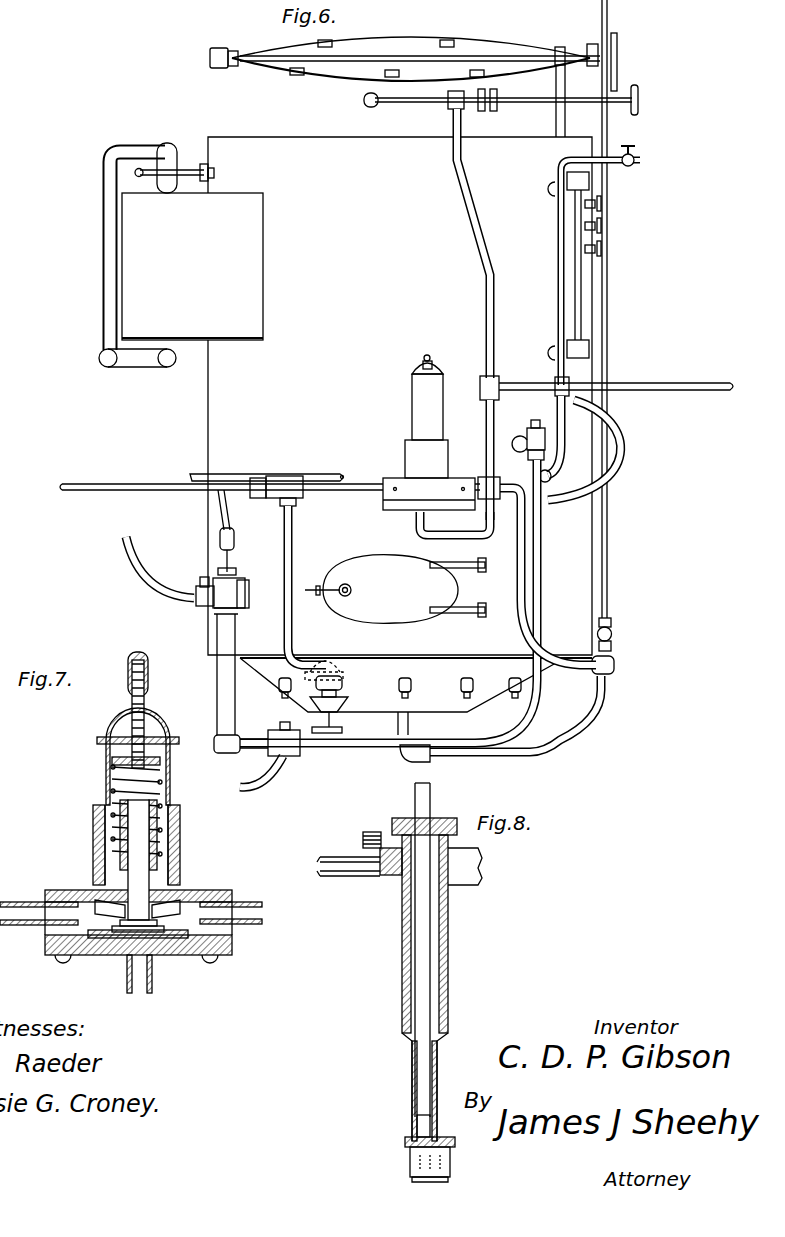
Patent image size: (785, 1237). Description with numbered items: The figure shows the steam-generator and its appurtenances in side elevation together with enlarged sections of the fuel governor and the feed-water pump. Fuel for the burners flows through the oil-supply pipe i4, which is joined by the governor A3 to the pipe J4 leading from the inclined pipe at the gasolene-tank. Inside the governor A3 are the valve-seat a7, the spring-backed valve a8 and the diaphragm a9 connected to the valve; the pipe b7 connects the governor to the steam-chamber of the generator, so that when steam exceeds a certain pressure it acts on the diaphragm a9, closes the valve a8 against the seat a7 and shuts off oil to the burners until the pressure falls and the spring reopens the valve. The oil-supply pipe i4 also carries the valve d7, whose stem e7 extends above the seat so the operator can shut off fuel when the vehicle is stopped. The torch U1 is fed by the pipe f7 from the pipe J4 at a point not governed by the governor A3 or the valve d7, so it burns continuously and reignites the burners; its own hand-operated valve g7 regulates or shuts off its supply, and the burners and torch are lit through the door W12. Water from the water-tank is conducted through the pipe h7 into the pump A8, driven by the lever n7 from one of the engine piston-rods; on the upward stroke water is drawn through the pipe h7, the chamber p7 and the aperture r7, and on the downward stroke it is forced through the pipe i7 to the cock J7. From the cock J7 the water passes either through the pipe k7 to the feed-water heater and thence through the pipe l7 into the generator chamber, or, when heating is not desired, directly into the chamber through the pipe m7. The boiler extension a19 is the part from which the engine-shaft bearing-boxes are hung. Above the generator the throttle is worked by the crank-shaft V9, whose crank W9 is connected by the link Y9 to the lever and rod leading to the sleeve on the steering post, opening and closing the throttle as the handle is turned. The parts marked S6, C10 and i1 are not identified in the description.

In FIG. 6, the crank-shaft V9 is at (376, 66).
In FIG. 6, the crank W9 is at (590, 44).
In FIG. 6, the link Y9 is at (617, 62).
In FIG. 6, the pipe connection S6 is at (188, 163).
In FIG. 6, the boiler extension a19 is at (200, 285).
In FIG. 6, the pipe b7 is at (496, 358).
In FIG. 7, the pipe b7 is at (142, 985).
In FIG. 6, the rod C10 is at (625, 384).
In FIG. 6, the governor A3 is at (443, 454).
In FIG. 7, the governor A3 is at (173, 787).
In FIG. 6, the lever n7 is at (242, 473).
In FIG. 6, the pipe J4 is at (65, 492).
In FIG. 7, the pipe J4 is at (20, 900).
In FIG. 6, the pipe l7 is at (608, 488).
In FIG. 6, the pipe k7 is at (140, 575).
In FIG. 6, the pipe f7 is at (284, 584).
In FIG. 6, the door W12 is at (395, 589).
In FIG. 6, the oil-supply pipe i4 is at (520, 610).
In FIG. 7, the oil-supply pipe i4 is at (262, 908).
In FIG. 6, the stem e7 is at (609, 593).
In FIG. 6, the pump A8 is at (230, 648).
In FIG. 8, the pump A8 is at (450, 962).
In FIG. 6, the torch U1 is at (343, 684).
In FIG. 6, the fitting i1 is at (412, 684).
In FIG. 6, the valve d7 is at (614, 664).
In FIG. 6, the pipe m7 is at (530, 700).
In FIG. 6, the pipe i7 is at (256, 738).
In FIG. 8, the pipe i7 is at (452, 1143).
In FIG. 6, the cock J7 is at (286, 730).
In FIG. 6, the hand-operated valve g7 is at (344, 730).
In FIG. 7, the spring-backed valve a8 is at (150, 850).
In FIG. 7, the valve-seat a7 is at (185, 905).
In FIG. 7, the diaphragm a9 is at (172, 940).
In FIG. 8, the chamber p7 is at (446, 935).
In FIG. 8, the aperture r7 is at (434, 1018).
In FIG. 8, the pipe h7 is at (324, 868).